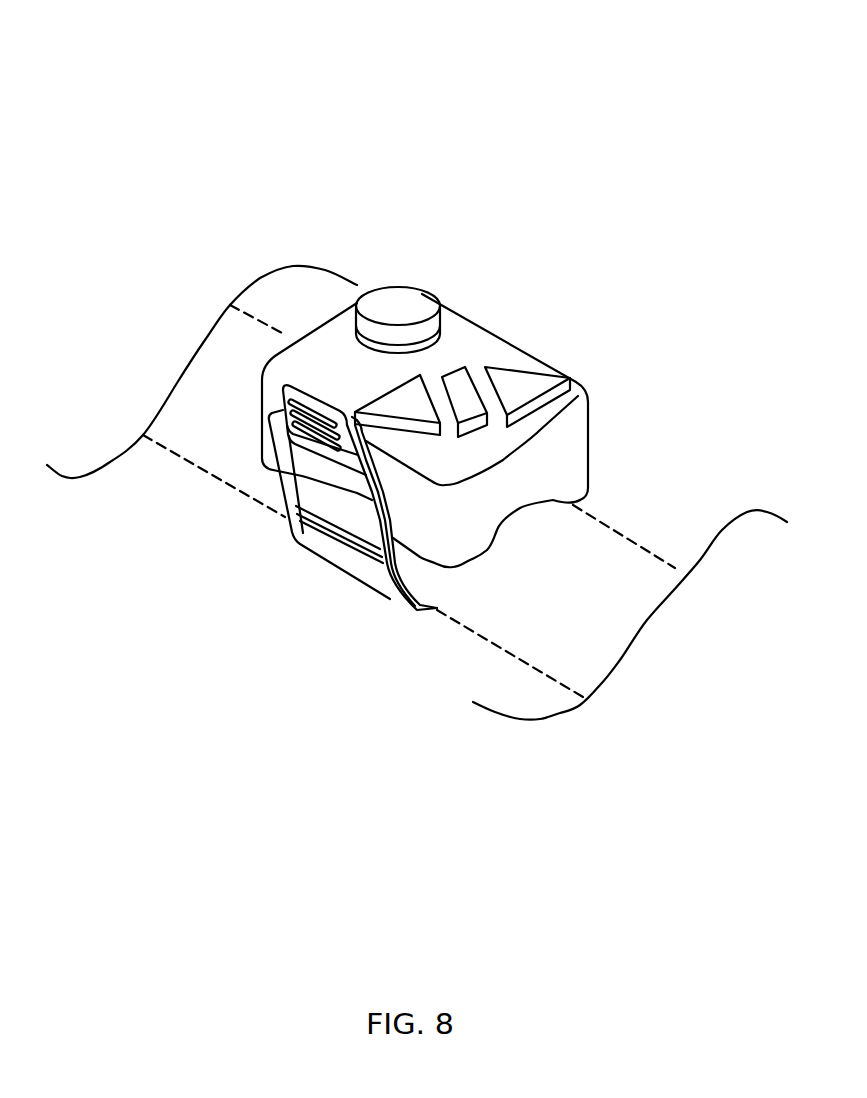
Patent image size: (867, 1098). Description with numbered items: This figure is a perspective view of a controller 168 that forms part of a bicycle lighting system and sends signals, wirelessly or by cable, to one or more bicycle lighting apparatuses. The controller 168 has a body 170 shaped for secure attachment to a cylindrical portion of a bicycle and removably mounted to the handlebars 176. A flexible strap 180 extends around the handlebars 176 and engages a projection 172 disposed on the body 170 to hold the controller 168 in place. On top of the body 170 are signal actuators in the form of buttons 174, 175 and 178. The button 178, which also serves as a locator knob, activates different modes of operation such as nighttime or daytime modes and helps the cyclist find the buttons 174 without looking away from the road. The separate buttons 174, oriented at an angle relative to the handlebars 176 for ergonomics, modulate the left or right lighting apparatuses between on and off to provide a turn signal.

The controller 168 is at (339, 76).
The body 170 is at (577, 463).
The projection 172 is at (320, 463).
The buttons 174 is at (530, 393).
The button 175 is at (467, 413).
The handlebars 176 is at (587, 650).
The button 178 is at (400, 320).
The flexible strap 180 is at (270, 427).